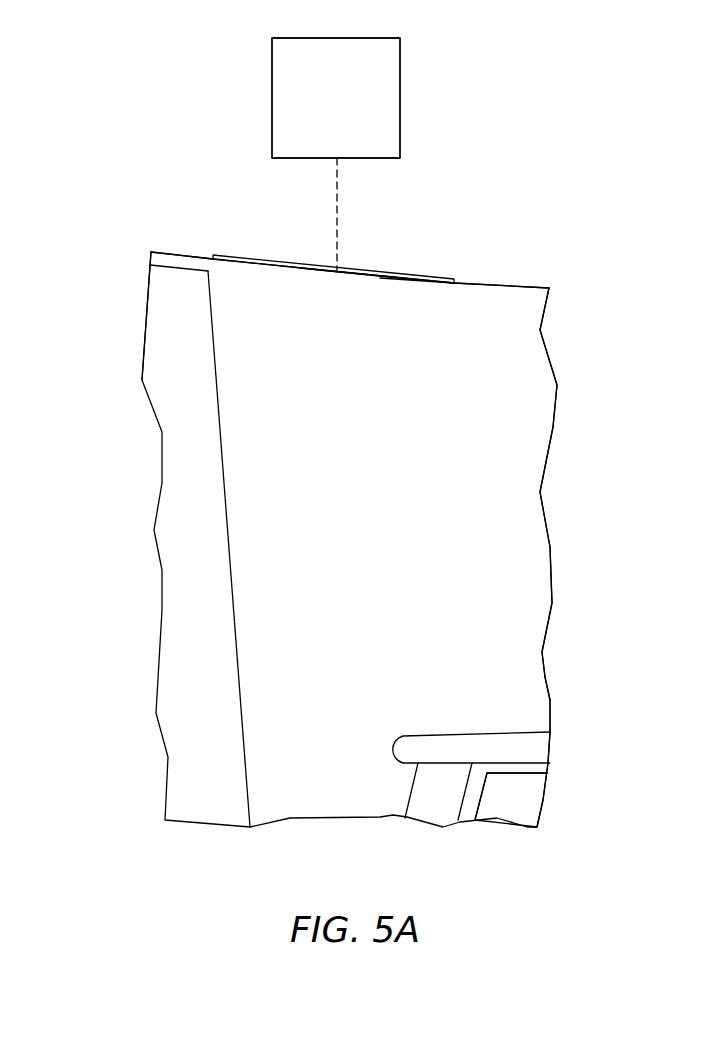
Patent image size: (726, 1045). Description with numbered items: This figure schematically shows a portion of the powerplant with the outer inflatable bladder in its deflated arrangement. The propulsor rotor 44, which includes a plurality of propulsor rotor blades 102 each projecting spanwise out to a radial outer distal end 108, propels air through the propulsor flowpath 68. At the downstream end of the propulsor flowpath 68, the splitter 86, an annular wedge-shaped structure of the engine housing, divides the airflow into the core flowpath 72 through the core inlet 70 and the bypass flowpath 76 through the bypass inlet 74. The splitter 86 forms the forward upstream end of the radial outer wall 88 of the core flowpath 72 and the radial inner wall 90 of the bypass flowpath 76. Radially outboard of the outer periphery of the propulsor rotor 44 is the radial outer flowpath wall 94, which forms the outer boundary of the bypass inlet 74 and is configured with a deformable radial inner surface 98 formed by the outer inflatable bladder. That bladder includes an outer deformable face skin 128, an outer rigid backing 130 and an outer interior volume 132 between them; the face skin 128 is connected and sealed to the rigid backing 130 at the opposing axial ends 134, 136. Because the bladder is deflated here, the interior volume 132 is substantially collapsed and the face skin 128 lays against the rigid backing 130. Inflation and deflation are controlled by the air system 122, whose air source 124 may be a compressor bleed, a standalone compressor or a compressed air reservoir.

The propulsor rotor 44 is at (155, 827).
The propulsor flowpath 68 is at (290, 553).
The core inlet 70 is at (362, 793).
The core flowpath 72 is at (527, 803).
The bypass inlet 74 is at (403, 567).
The bypass flowpath 76 is at (523, 562).
The splitter 86 is at (393, 747).
The radial outer wall of the core flowpath 88 is at (520, 766).
The radial inner wall of the bypass flowpath 90 is at (526, 729).
The radial outer flowpath wall 94 is at (358, 290).
The deformable radial inner surface 98 is at (405, 283).
The propulsor rotor blade 102 is at (217, 655).
The radial outer distal end 108 is at (173, 268).
The air system 122 is at (417, 83).
The air source 124 is at (357, 109).
The outer deformable face skin 128 is at (288, 277).
The outer rigid backing 130 is at (285, 265).
The outer interior volume 132 is at (385, 278).
The axial end of the outer inflatable bladder 134 is at (213, 257).
The axial end of the outer inflatable bladder 136 is at (460, 278).